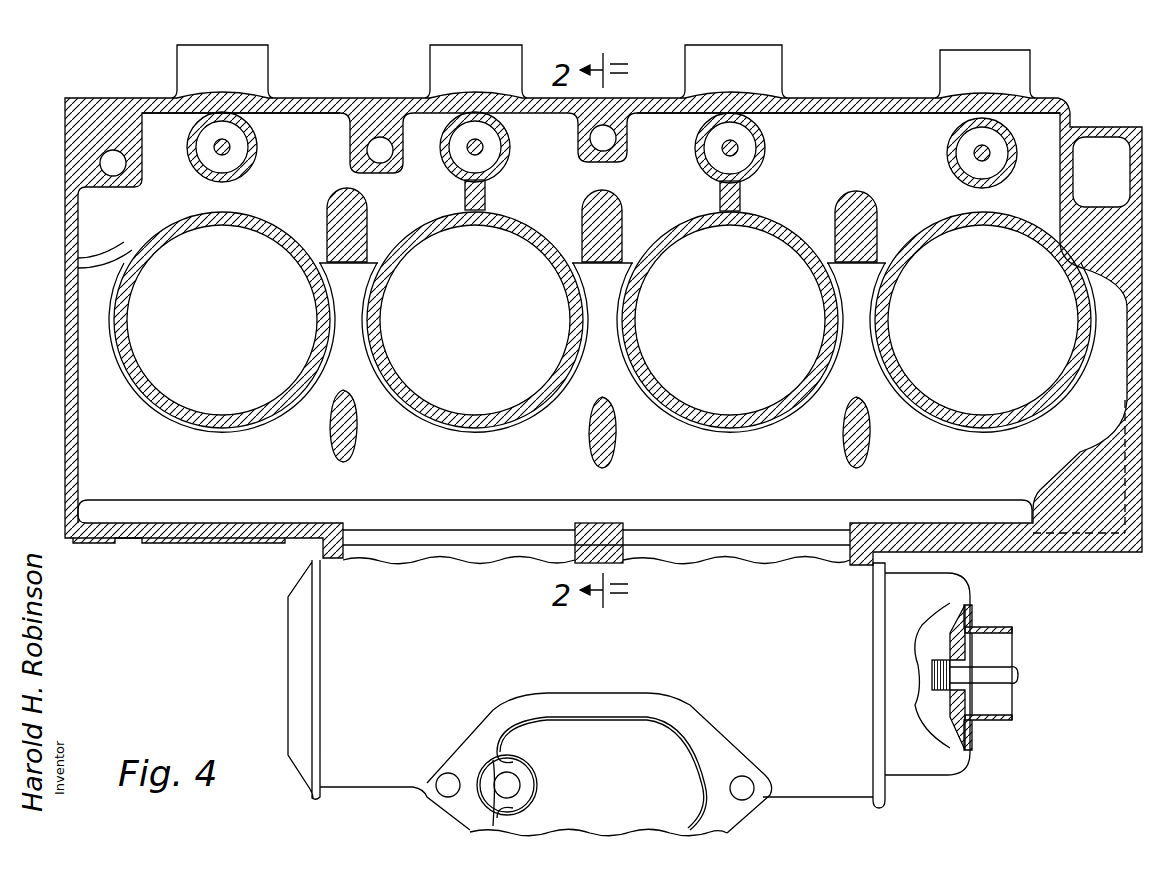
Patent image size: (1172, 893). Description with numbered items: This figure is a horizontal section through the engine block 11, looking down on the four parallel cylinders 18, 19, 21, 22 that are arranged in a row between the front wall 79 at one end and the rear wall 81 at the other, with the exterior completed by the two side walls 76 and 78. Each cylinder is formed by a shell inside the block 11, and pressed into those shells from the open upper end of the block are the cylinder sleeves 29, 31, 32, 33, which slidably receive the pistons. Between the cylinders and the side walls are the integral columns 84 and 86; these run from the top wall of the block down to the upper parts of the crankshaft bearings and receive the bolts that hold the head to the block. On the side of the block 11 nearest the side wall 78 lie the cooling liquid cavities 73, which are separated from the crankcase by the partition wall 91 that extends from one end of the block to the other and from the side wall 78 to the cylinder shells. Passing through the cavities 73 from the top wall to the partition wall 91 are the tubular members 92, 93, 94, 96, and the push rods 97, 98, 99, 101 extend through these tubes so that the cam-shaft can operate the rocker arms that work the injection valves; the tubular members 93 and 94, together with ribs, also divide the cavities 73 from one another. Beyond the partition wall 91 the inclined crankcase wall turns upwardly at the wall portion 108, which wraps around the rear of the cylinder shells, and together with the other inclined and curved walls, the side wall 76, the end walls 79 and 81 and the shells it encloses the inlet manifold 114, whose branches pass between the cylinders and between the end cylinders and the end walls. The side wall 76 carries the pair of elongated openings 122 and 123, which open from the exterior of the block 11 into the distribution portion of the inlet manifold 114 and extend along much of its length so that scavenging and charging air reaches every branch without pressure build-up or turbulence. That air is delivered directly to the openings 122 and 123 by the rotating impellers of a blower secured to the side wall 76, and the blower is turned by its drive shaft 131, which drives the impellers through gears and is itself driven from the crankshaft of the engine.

The engine block 11 is at (65, 236).
The front wall 79 is at (70, 336).
The cooling liquid cavities 73 is at (316, 130).
The partition wall 91 is at (660, 135).
The side wall 78 is at (869, 100).
The tubular member 92 is at (254, 165).
The tubular member 93 is at (509, 160).
The tubular member 94 is at (765, 167).
The tubular member 96 is at (951, 172).
The push rod 97 is at (228, 149).
The push rod 98 is at (481, 148).
The push rod 99 is at (736, 150).
The push rod 101 is at (977, 152).
The integral columns 86 is at (350, 196).
The upwardly turned wall portion 108 is at (606, 266).
The cylinder 18 is at (135, 287).
The cylinder 19 is at (393, 290).
The cylinder 21 is at (795, 388).
The cylinder 22 is at (968, 390).
The cylinder sleeve 29 is at (140, 378).
The cylinder sleeve 31 is at (395, 381).
The cylinder sleeve 32 is at (640, 381).
The cylinder sleeve 33 is at (900, 344).
The integral columns 84 is at (357, 428).
The rear wall 81 is at (1132, 389).
The elongated opening 122 is at (417, 533).
The elongated opening 123 is at (727, 533).
The inlet manifold 114 is at (666, 548).
The side wall 76 is at (213, 542).
The drive shaft 131 is at (1018, 676).